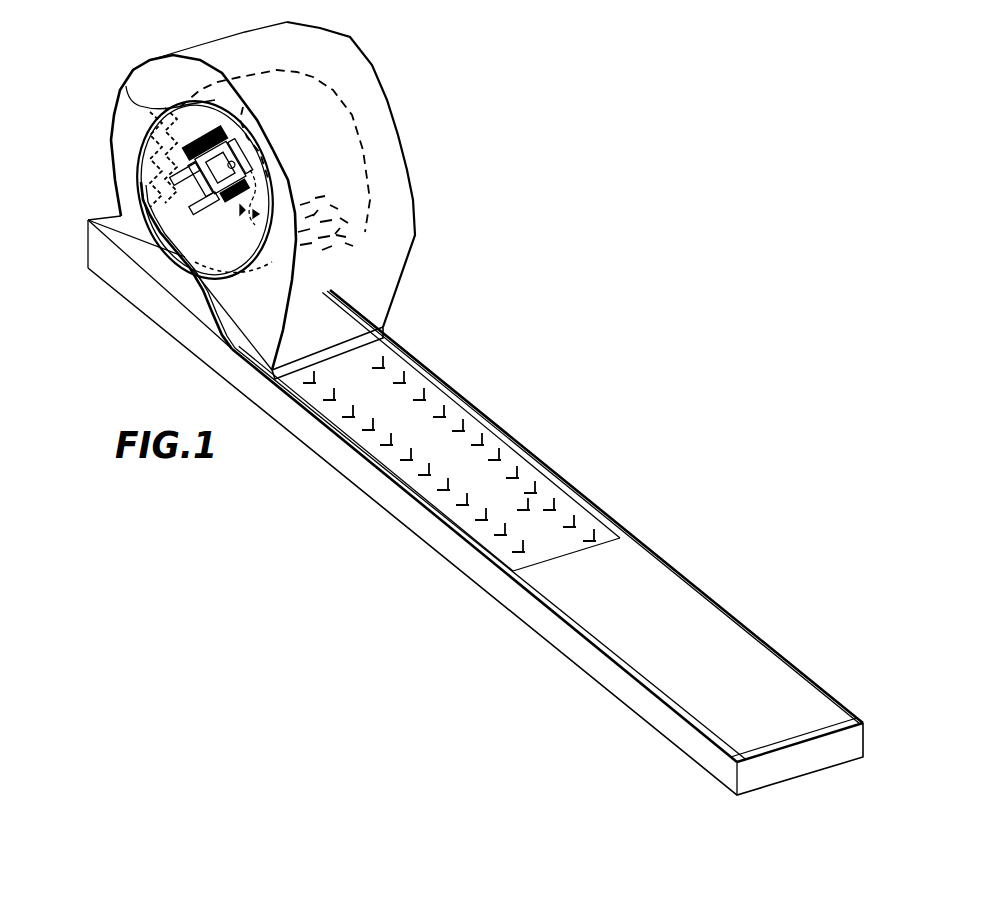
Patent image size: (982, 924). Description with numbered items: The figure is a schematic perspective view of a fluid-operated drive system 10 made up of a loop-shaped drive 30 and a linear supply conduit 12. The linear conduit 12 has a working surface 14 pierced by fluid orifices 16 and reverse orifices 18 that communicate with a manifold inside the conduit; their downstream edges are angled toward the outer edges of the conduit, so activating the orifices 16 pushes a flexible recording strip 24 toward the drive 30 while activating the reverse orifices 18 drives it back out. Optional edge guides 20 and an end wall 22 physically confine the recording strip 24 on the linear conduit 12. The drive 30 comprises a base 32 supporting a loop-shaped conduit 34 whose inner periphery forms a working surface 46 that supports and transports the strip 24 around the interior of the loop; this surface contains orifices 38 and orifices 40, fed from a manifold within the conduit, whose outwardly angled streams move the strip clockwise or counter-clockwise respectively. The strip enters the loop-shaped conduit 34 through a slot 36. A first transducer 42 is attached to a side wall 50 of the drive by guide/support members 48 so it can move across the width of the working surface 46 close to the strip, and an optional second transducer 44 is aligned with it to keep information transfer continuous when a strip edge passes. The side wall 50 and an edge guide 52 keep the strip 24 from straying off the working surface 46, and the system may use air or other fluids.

The drive system 10 is at (597, 184).
The linear supply conduit 12 is at (363, 495).
The working surface 14 is at (487, 477).
The fluid orifices 16 is at (462, 428).
The reverse orifices 18 is at (463, 497).
The edge guides 20 is at (290, 398).
The end wall 22 is at (822, 731).
The flexible recording strip 24 is at (700, 681).
The loop-shaped drive 30 is at (377, 65).
The base 32 is at (140, 297).
The loop-shaped conduit 34 is at (113, 115).
The slot 36 is at (213, 330).
The orifices 38 is at (113, 287).
The orifices 40 is at (193, 235).
The first transducer 42 is at (170, 237).
The second transducer 44 is at (232, 182).
The working surface 46 is at (182, 134).
The guide/support members 48 is at (182, 184).
The side wall 50 is at (317, 130).
The edge guide 52 is at (126, 86).